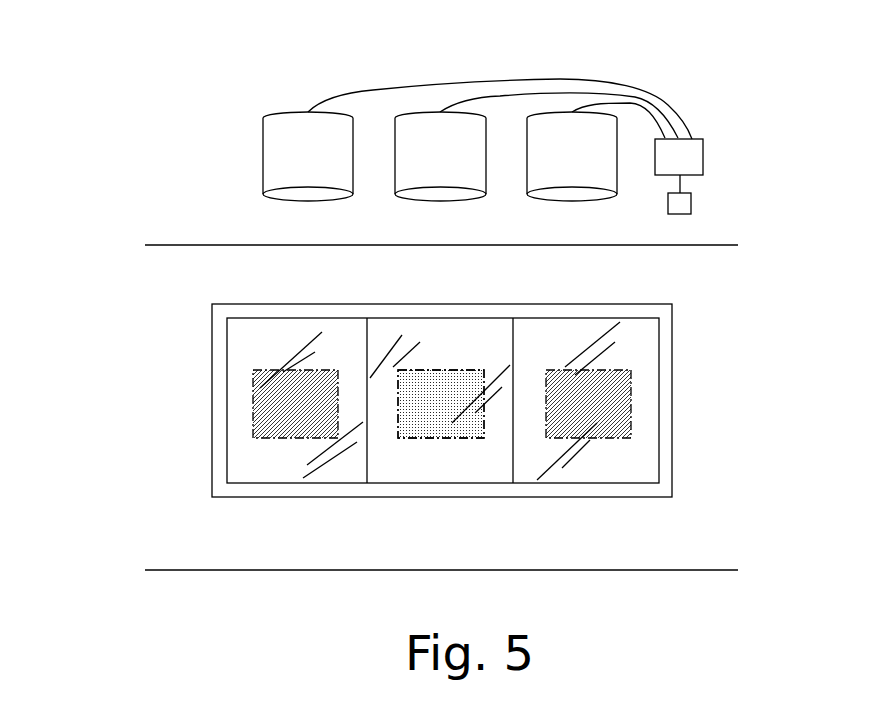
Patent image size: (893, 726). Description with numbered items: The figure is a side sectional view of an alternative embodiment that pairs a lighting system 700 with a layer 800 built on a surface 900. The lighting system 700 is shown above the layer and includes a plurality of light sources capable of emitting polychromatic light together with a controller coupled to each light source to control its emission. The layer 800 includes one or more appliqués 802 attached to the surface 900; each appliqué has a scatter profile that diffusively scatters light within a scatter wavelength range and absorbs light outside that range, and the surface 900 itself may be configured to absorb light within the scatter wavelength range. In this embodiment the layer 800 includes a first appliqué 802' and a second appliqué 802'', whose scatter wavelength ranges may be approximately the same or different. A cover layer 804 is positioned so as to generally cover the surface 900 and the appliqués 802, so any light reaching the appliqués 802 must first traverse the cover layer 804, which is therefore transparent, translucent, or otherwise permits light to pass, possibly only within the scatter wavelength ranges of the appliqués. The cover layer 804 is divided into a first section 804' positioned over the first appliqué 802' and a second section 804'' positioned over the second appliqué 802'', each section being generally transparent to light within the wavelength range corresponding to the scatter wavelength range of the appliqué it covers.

The lighting system 700 is at (327, 92).
The layer 800 is at (212, 378).
The appliqués 802 is at (397, 489).
The first appliqué 802' is at (293, 489).
The second appliqué 802'' is at (440, 489).
The cover layer 804 is at (600, 474).
The first section 804' is at (244, 394).
The second section 804'' is at (440, 340).
The surface 900 is at (182, 484).